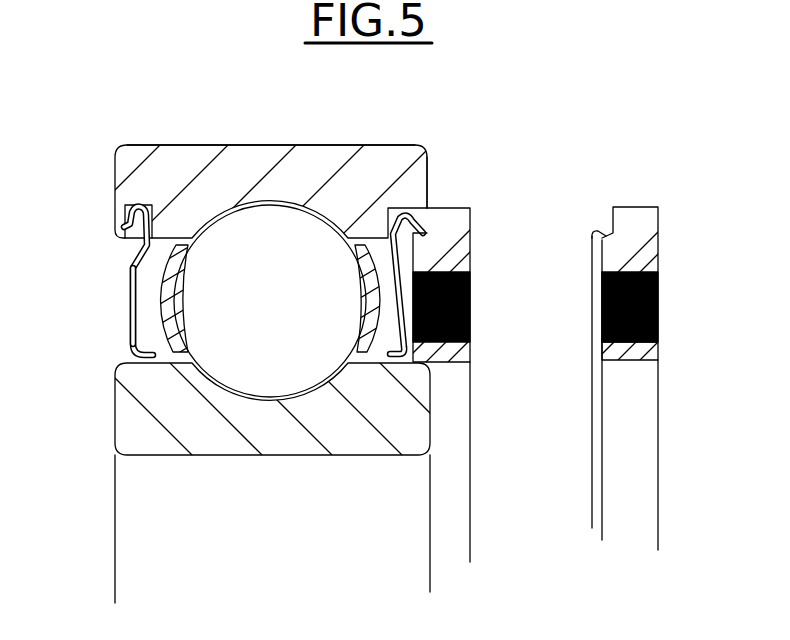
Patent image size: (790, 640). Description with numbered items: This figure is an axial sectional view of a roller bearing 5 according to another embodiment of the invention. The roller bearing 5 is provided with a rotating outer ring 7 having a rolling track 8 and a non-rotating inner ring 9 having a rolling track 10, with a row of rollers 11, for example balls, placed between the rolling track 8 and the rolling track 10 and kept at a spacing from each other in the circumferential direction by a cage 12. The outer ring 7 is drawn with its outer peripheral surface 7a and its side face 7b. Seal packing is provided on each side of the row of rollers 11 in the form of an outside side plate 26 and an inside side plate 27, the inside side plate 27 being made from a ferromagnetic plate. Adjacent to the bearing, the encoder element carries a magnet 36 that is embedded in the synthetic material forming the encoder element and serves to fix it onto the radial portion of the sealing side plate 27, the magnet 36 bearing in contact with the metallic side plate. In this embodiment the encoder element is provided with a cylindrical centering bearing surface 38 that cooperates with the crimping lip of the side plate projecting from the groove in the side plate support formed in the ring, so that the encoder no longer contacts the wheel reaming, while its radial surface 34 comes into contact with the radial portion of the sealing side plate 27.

The roller bearing 5 is at (113, 193).
The outer ring 7 is at (160, 197).
The outer peripheral surface of outer ring 7a is at (353, 145).
The side face of outer ring 7b is at (427, 180).
The rolling track 8 is at (172, 365).
The inner ring 9 is at (165, 403).
The rolling track 10 is at (150, 248).
The rollers 11 is at (217, 287).
The cage 12 is at (172, 270).
The outside side plate 26 is at (130, 312).
The inside side plate 27 is at (395, 212).
The radial surface 34 is at (602, 296).
The magnet 36 is at (658, 297).
The cylindrical centering bearing surface 38 is at (603, 234).